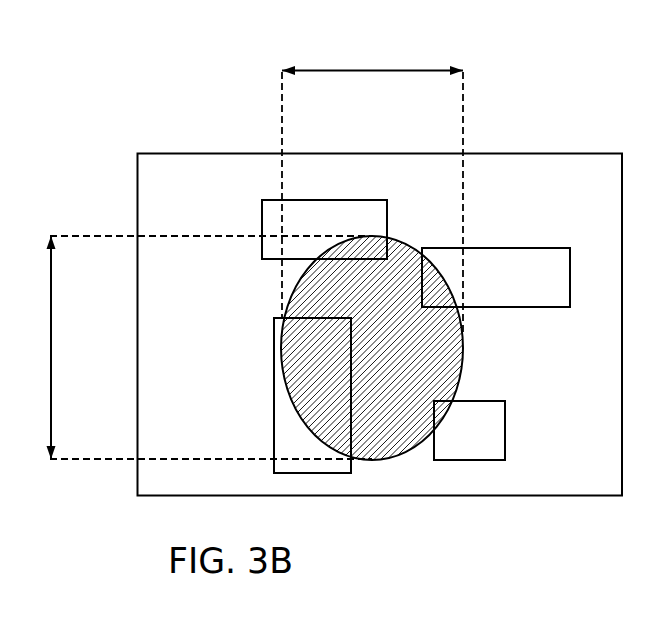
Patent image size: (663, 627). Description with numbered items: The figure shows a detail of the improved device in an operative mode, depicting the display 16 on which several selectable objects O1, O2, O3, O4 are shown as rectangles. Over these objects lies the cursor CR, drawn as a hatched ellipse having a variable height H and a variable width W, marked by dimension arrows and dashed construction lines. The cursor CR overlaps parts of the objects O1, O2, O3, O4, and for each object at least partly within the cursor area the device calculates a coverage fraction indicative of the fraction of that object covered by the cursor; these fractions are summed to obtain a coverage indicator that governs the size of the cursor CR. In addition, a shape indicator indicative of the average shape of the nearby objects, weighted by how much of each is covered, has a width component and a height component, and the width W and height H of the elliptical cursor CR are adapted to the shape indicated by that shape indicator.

The display 16 is at (595, 203).
The cursor CR is at (282, 297).
The variable width W is at (372, 178).
The variable height H is at (210, 347).
The object O1 is at (388, 213).
The object O2 is at (470, 247).
The object O3 is at (328, 316).
The object O4 is at (483, 400).